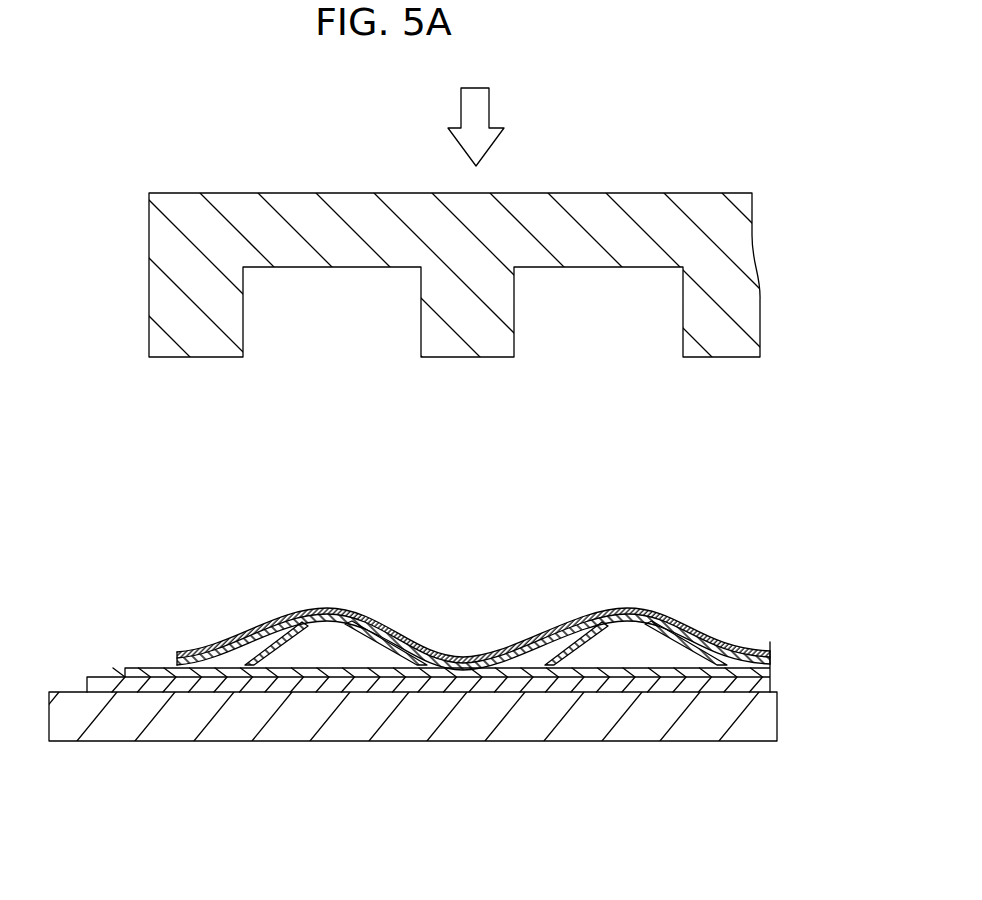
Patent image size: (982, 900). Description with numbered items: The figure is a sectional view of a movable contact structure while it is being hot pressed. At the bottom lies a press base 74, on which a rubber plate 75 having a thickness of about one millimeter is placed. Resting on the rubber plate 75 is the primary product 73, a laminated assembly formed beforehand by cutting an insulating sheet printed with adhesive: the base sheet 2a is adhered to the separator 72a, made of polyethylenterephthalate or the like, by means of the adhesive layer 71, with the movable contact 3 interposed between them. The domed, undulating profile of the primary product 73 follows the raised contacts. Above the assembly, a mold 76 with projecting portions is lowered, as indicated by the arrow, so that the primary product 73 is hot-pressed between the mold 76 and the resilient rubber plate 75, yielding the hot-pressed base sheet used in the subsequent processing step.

The mold 76 is at (670, 216).
The press base 74 is at (341, 723).
The rubber plate 75 is at (482, 683).
The primary product 73 is at (660, 508).
The adhesive layer 71 is at (488, 655).
The separator 72a is at (333, 667).
The base sheet 2a is at (580, 623).
The movable contact 3 is at (635, 608).